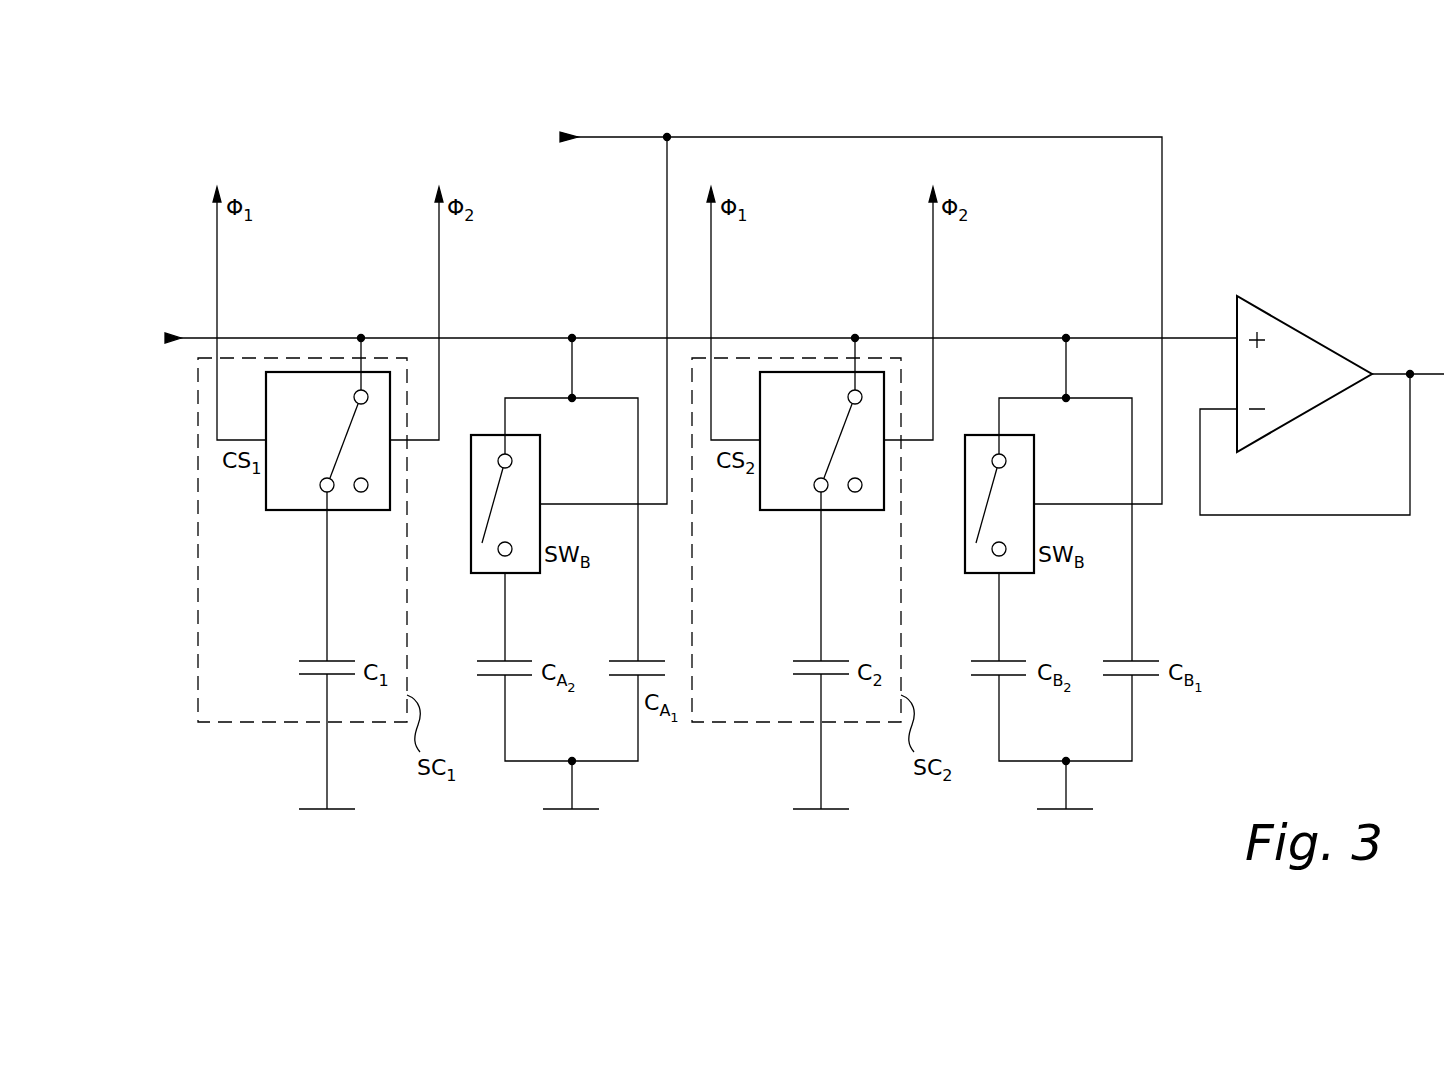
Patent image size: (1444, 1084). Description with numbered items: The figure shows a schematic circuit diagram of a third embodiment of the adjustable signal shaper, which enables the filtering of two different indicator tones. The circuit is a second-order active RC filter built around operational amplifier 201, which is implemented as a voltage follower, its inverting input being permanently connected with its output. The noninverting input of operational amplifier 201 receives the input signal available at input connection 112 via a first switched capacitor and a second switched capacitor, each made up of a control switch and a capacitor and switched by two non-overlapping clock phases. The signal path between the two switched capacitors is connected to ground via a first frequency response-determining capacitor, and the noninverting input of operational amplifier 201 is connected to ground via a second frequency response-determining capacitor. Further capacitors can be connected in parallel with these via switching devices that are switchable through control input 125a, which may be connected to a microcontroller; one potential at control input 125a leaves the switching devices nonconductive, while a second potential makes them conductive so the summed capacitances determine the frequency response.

The input connection 112 is at (677, 338).
The control input 125a is at (848, 305).
The operational amplifier 201 is at (1309, 353).